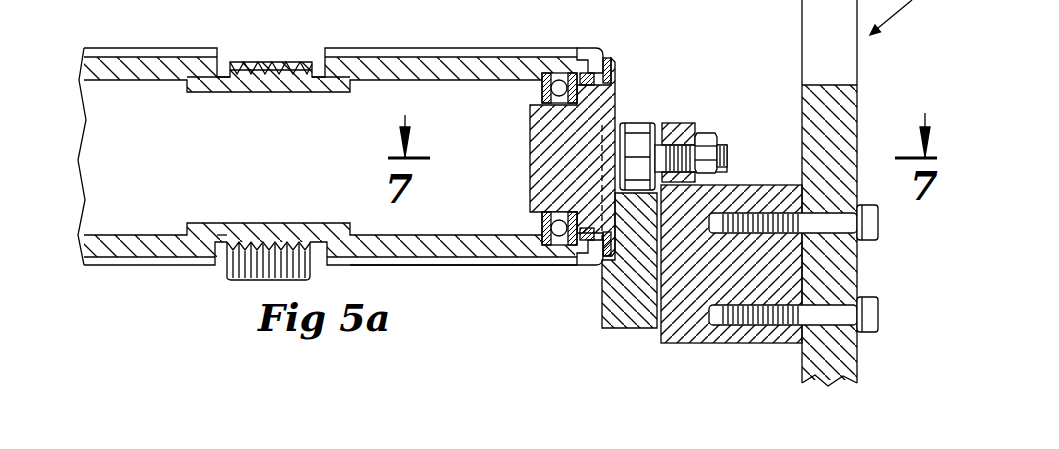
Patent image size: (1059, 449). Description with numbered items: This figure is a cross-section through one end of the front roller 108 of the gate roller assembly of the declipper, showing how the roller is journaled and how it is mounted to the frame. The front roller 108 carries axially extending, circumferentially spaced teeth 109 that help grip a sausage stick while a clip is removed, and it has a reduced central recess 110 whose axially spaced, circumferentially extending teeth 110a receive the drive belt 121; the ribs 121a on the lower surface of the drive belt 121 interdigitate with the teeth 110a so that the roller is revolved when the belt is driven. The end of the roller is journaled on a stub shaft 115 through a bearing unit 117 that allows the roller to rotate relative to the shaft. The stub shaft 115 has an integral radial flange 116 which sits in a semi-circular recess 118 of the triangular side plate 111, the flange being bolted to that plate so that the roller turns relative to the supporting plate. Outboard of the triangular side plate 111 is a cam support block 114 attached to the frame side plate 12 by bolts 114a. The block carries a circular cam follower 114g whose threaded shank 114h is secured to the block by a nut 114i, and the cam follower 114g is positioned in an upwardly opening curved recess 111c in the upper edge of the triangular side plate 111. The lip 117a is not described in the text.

The side plate 12 is at (862, 133).
The front roller 108 is at (487, 281).
The teeth 109 is at (133, 52).
The central recess 110 is at (225, 74).
The teeth 110a is at (251, 244).
The triangular side plate 111 is at (645, 332).
The curved recess 111c is at (632, 190).
The cam support block 114 is at (726, 349).
The bolts 114a is at (877, 240).
The cam follower 114g is at (638, 123).
The threaded shank 114h is at (720, 152).
The nut 114i is at (718, 141).
The stub shaft 115 is at (624, 92).
The radial flange 116 is at (612, 57).
The bearing unit 117 is at (538, 89).
The tube lip 117a is at (590, 62).
The semi-circular recess 118 is at (618, 252).
The drive belt 121 is at (258, 66).
The ribs 121a is at (266, 73).